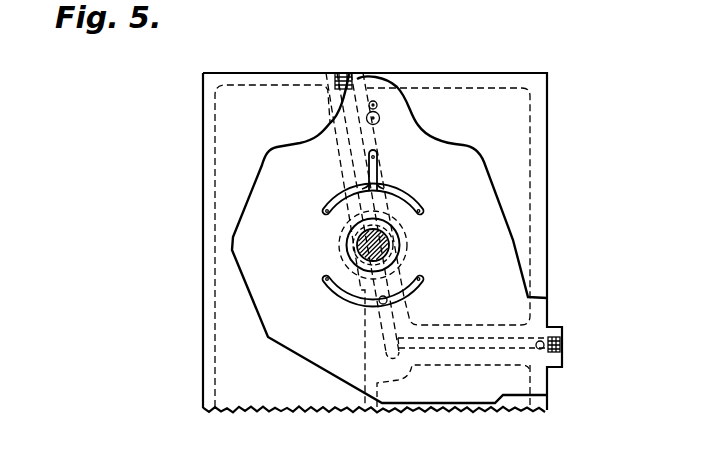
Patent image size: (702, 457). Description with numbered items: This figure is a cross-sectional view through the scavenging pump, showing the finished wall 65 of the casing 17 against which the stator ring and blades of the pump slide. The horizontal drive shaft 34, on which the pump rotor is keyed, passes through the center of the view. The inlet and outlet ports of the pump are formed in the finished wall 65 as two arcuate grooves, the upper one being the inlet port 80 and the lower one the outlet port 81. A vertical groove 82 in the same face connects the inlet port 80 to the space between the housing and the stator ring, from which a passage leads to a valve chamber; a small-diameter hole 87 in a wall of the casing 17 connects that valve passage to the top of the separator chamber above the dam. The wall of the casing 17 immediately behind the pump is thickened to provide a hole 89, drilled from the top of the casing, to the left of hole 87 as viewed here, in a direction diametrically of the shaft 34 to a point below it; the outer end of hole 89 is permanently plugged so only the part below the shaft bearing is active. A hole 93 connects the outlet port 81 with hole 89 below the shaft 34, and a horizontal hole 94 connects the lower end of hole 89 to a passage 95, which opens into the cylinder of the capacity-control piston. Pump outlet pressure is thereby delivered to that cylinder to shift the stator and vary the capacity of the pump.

The casing 17 is at (545, 212).
The horizontal drive shaft 34 is at (356, 238).
The finished wall 65 is at (389, 238).
The inlet port 80 is at (423, 203).
The outlet port 81 is at (420, 282).
The vertical groove 82 is at (380, 157).
The hole of small diameter 87 is at (380, 117).
The hole 89 is at (345, 158).
The hole 93 is at (382, 304).
The horizontal hole 94 is at (449, 356).
The passage 95 is at (544, 343).